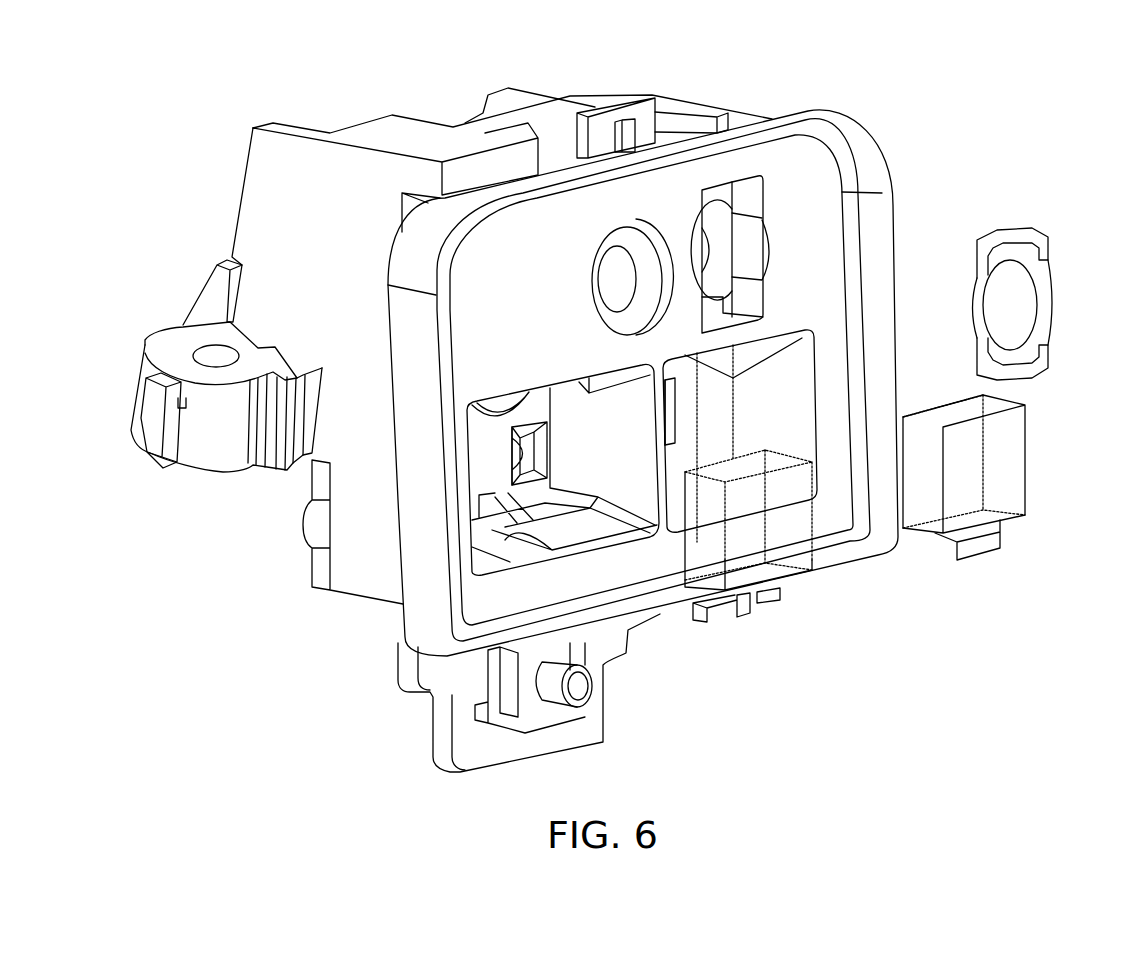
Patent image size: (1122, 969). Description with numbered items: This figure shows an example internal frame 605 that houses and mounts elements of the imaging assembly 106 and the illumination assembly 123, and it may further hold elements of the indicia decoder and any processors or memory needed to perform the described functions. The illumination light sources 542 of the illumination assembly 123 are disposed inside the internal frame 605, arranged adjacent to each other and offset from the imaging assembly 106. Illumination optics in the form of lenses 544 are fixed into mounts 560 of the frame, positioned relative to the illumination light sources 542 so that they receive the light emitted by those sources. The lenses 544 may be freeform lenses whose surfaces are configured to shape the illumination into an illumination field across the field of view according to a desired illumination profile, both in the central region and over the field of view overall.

The imaging assembly 106 is at (615, 243).
The internal frame 605 is at (866, 142).
The mounts 560 is at (725, 378).
The illumination light sources 542 is at (512, 485).
The illumination assembly 123 is at (497, 463).
The lenses 544 is at (797, 573).